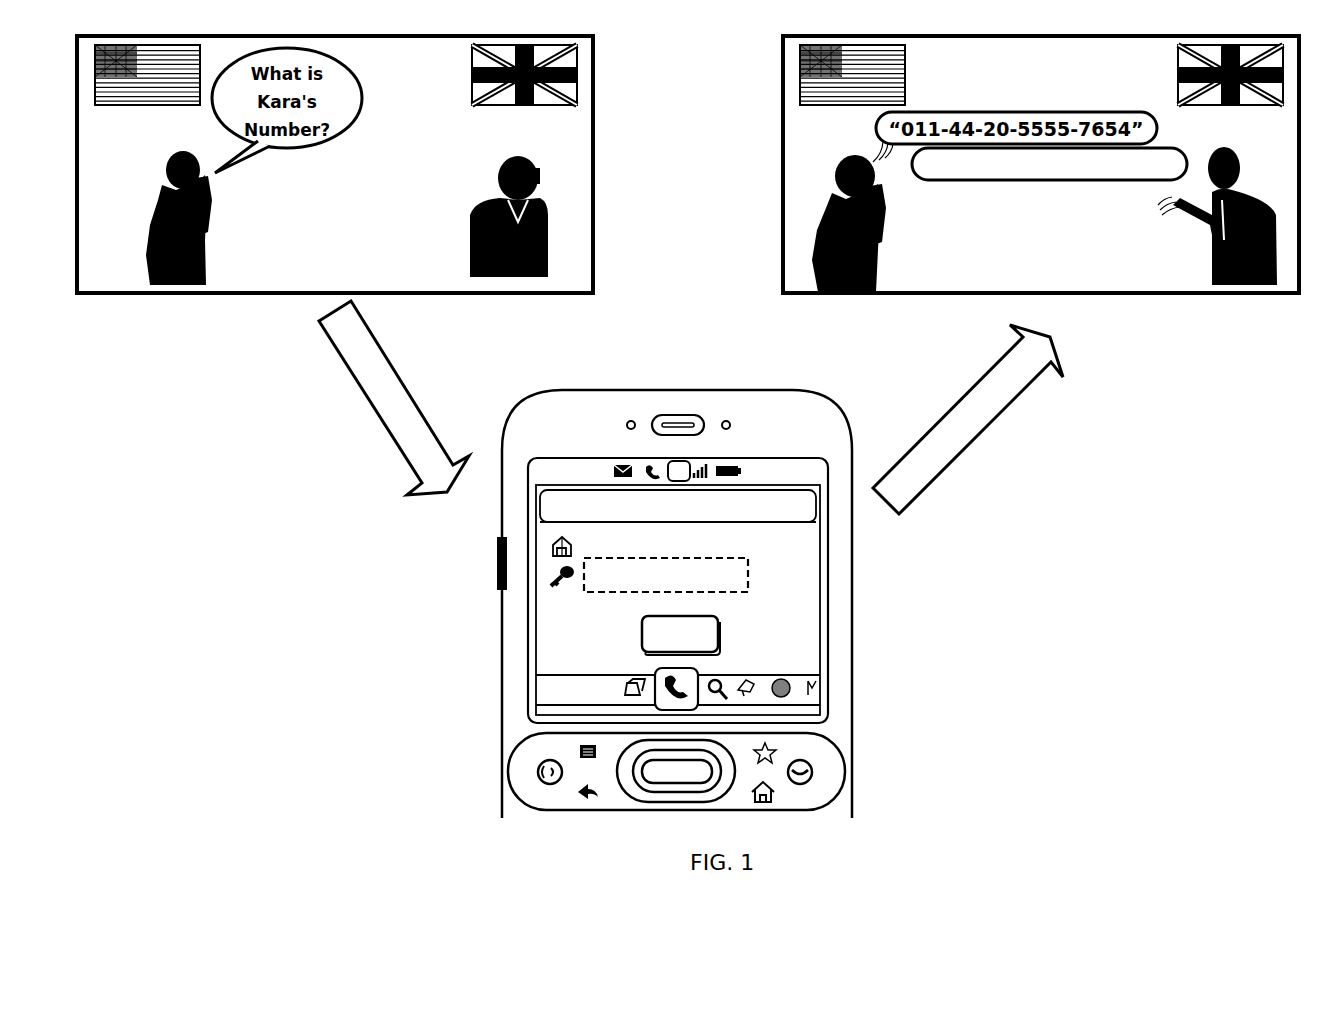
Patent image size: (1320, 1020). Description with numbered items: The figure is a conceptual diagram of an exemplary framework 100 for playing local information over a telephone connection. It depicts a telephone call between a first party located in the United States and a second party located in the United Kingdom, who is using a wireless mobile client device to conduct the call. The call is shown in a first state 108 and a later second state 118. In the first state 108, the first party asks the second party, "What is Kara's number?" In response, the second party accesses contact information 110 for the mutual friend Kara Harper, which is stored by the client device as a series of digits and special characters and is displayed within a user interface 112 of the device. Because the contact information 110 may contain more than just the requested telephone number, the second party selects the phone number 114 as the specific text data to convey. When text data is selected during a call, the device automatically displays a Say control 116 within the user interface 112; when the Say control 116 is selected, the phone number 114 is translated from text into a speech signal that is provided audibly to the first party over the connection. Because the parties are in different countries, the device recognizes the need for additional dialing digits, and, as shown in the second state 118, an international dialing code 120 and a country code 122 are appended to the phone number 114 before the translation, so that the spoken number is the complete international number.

The framework 100 is at (1198, 772).
The first state 108 is at (593, 40).
The contact information 110 is at (678, 677).
The user interface 112 is at (678, 574).
The phone number 114 is at (748, 580).
The Say control 116 is at (642, 632).
The second state 118 is at (783, 44).
The international dialing code 120 is at (972, 185).
The country code 122 is at (1012, 185).